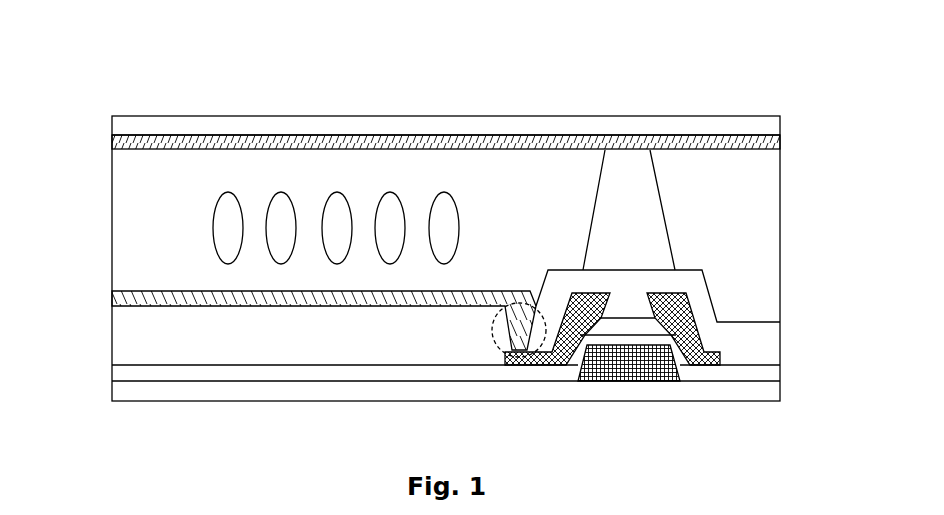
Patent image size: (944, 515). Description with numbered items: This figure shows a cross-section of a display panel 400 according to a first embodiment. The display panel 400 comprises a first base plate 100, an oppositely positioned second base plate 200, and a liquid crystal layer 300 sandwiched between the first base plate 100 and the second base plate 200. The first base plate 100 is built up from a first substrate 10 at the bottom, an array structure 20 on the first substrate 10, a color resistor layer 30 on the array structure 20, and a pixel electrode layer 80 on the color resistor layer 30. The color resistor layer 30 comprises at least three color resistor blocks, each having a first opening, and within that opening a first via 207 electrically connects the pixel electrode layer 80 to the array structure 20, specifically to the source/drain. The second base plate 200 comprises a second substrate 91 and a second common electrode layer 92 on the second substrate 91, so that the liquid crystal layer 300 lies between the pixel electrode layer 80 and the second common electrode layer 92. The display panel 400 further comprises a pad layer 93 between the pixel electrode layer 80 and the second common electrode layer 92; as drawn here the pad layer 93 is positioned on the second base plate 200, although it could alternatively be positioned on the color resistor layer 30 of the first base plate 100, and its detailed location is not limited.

The display panel 400 is at (134, 91).
The second base plate 200 is at (449, 143).
The liquid crystal layer 300 is at (436, 217).
The first base plate 100 is at (449, 354).
The second substrate 91 is at (780, 125).
The second common electrode layer 92 is at (780, 146).
The pad layer 93 is at (663, 208).
The pixel electrode layer 80 is at (180, 300).
The color resistor layer 30 is at (250, 330).
The first via 207 is at (503, 345).
The array structure 20 is at (792, 308).
The first substrate 10 is at (780, 391).